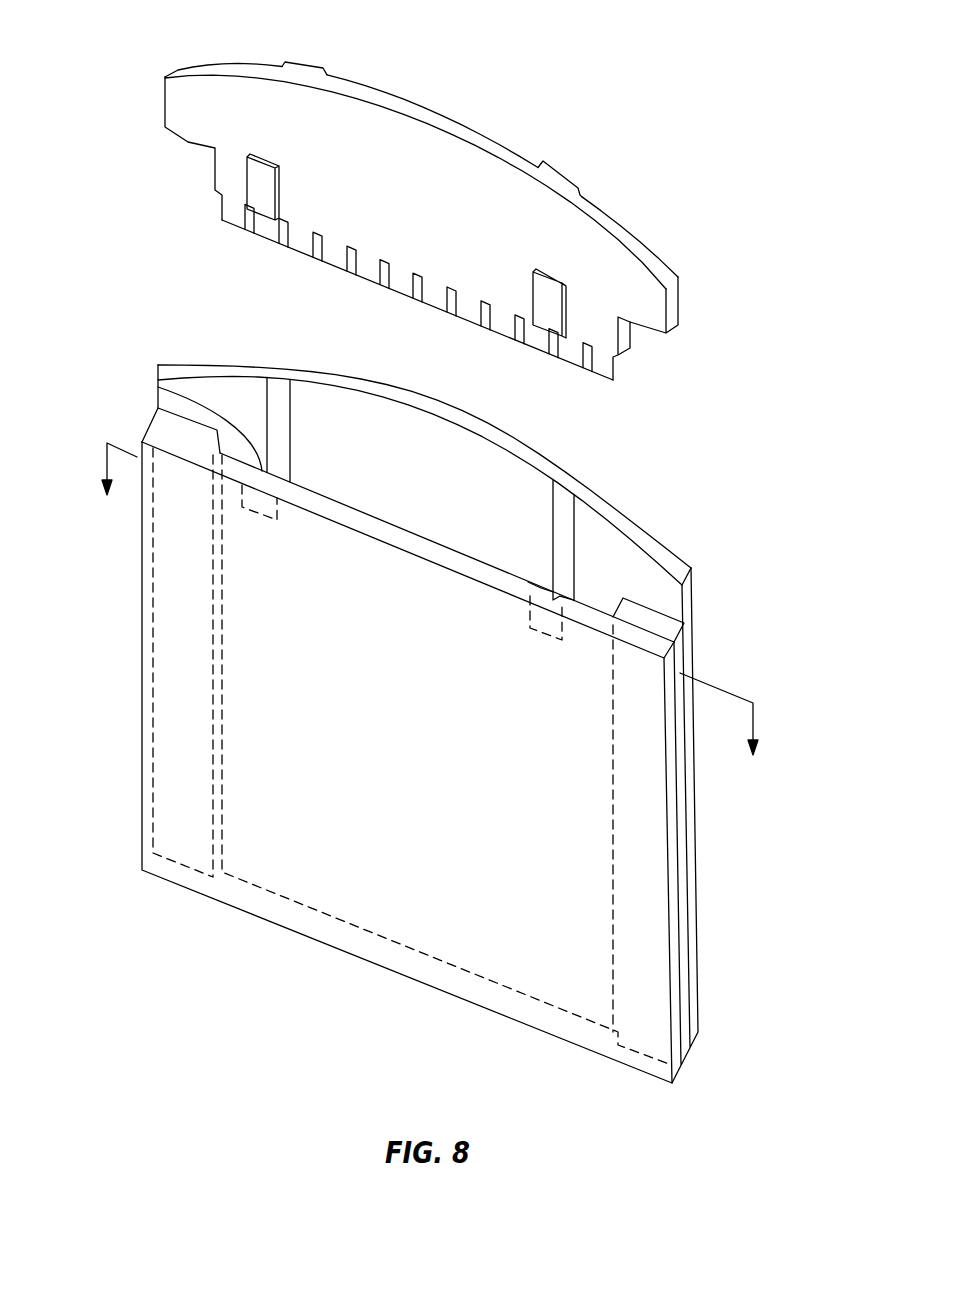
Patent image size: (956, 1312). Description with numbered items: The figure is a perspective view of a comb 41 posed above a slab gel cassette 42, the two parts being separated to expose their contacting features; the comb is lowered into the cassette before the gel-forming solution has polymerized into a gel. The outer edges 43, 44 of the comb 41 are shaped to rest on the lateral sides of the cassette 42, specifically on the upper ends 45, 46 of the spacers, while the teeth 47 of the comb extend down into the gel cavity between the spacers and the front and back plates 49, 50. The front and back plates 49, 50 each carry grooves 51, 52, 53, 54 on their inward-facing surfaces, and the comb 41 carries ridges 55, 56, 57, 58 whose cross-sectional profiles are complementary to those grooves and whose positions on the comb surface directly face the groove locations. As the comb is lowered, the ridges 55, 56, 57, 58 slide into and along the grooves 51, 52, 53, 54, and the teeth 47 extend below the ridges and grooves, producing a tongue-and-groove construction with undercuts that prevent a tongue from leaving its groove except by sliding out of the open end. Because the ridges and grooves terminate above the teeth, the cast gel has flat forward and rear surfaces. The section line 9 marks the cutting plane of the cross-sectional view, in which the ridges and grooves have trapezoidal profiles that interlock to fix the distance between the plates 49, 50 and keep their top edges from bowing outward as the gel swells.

The comb 41 is at (700, 175).
The slab gel cassette 42 is at (705, 508).
The outer edge of the comb 43 is at (187, 140).
The outer edge of the comb 44 is at (652, 334).
The upper end of spacer 45 is at (177, 428).
The upper end of spacer 46 is at (655, 630).
The teeth of the comb 47 is at (604, 381).
The front plate 49 is at (430, 557).
The back plate 50 is at (430, 402).
The groove 51 is at (277, 420).
The groove 52 is at (562, 510).
The groove 53 is at (158, 385).
The groove 54 is at (550, 590).
The ridge 55 is at (300, 70).
The ridge 56 is at (560, 172).
The ridge 57 is at (255, 192).
The ridge 58 is at (550, 296).
The section line 9 is at (430, 612).